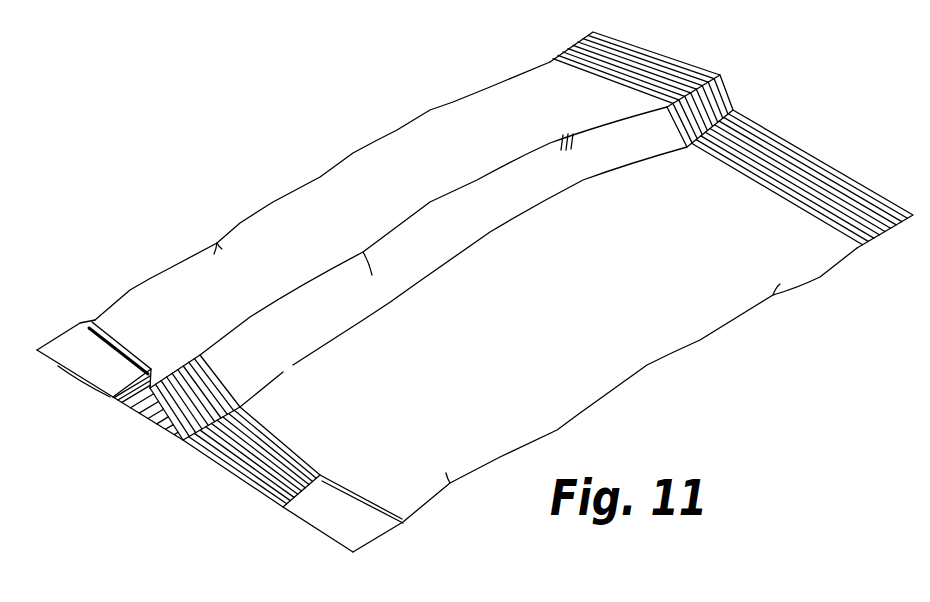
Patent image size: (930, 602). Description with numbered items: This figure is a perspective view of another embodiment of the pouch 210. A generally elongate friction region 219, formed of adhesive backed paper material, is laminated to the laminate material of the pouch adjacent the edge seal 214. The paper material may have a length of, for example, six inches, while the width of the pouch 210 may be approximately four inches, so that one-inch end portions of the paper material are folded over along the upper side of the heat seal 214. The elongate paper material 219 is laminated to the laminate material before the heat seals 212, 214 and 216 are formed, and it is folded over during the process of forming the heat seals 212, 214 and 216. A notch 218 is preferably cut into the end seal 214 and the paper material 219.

The pouch 210 is at (340, 102).
The heat seal 212 is at (640, 70).
The edge seal 214 is at (273, 493).
The heat seal 216 is at (440, 222).
The notch 218 is at (227, 470).
The friction region 219 is at (78, 345).